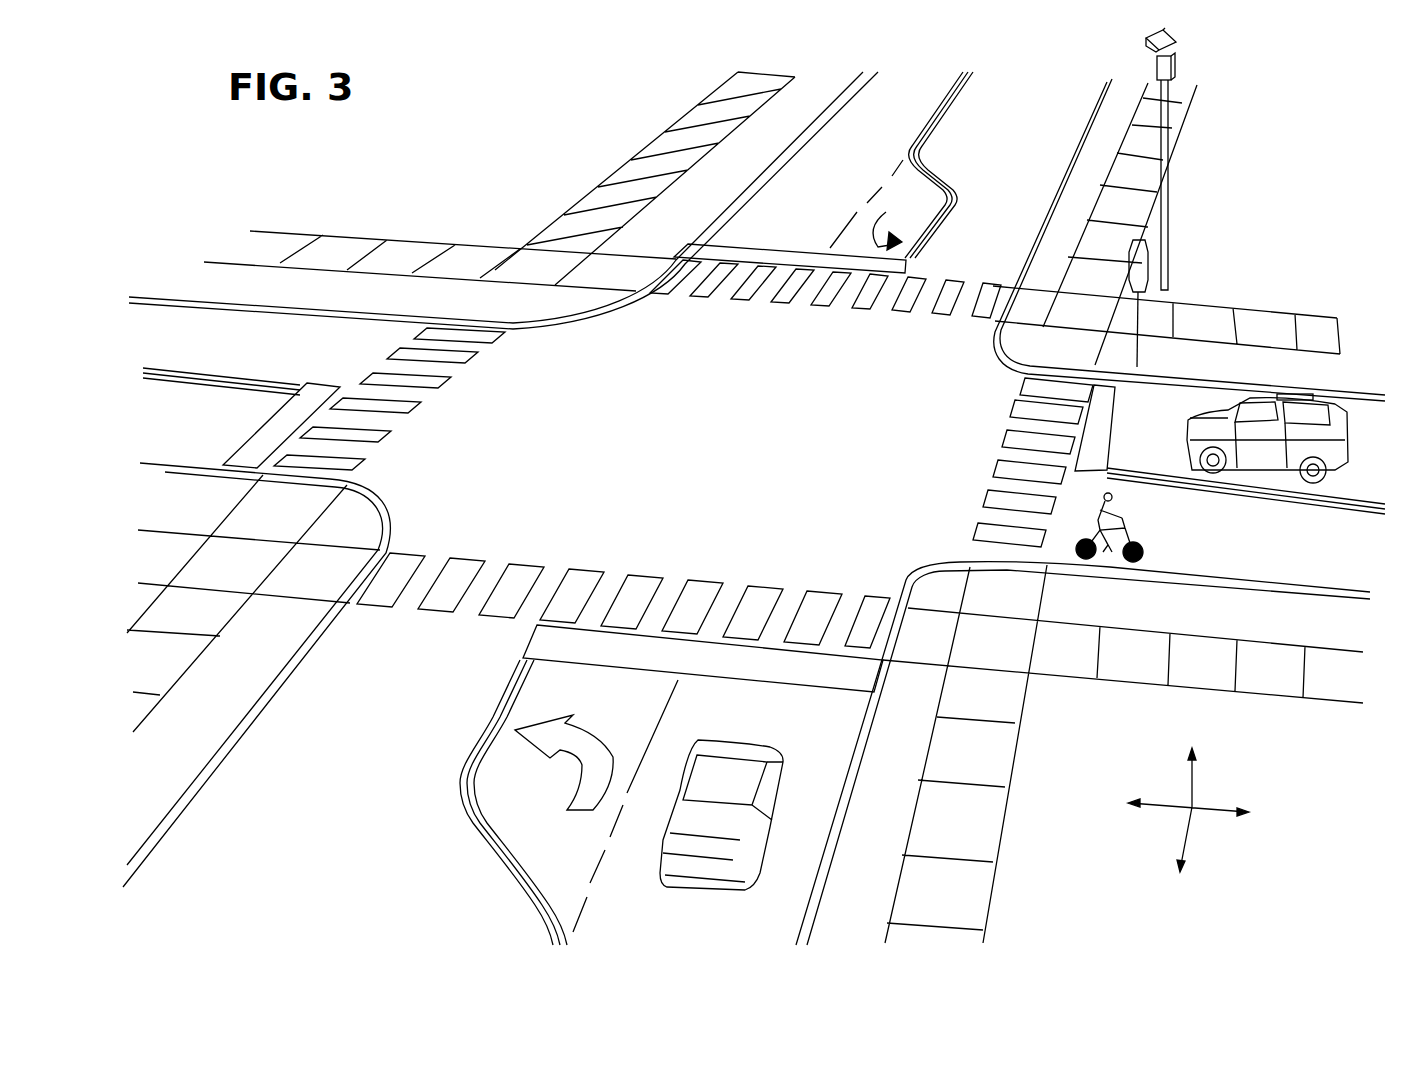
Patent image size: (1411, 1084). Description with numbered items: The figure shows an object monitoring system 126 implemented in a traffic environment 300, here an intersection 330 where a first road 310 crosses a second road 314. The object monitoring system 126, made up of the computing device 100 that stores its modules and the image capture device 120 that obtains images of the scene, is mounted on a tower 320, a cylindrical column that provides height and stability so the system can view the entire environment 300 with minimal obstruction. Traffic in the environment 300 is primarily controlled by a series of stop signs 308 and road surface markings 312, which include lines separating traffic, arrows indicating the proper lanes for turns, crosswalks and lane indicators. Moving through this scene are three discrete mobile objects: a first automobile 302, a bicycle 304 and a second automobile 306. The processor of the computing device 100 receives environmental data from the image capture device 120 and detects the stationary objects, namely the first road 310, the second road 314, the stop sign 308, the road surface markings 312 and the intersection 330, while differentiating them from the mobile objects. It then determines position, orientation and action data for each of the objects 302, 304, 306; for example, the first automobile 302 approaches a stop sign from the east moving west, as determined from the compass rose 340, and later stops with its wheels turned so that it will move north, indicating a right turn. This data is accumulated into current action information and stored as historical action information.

The computing device 100 is at (1178, 65).
The image capture device 120 is at (1180, 34).
The object monitoring system 126 is at (1187, 52).
The environment 300 is at (1307, 165).
The discrete mobile object 302 is at (1350, 422).
The discrete mobile object 304 is at (1145, 552).
The discrete mobile object 306 is at (787, 763).
The stop sign 308 is at (1150, 240).
The first road 310 is at (1145, 420).
The road surface markings 312 is at (950, 213).
The second road 314 is at (815, 175).
The tower 320 is at (1177, 112).
The intersection 330 is at (753, 450).
The compass rose 340 is at (1192, 807).